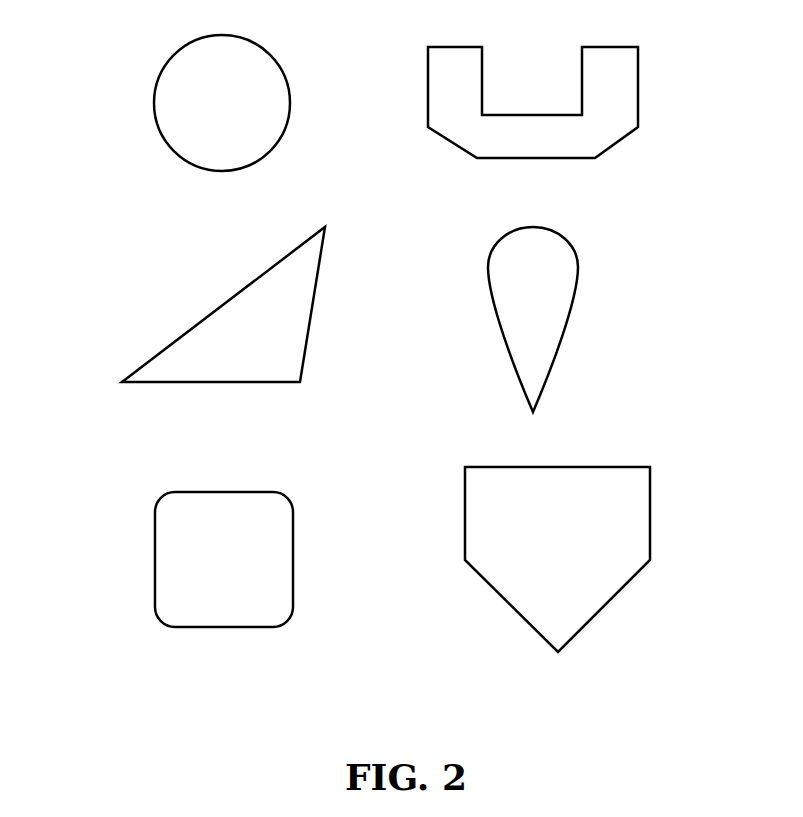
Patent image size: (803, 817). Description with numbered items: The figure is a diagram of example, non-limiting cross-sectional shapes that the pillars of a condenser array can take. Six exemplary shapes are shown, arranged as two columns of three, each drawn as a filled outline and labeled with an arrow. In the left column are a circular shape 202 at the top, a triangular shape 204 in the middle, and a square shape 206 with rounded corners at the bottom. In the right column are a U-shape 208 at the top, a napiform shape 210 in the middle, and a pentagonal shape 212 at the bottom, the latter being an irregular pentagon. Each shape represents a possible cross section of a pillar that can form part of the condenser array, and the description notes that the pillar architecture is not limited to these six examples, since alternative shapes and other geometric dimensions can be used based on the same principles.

The circular shape 202 is at (156, 70).
The triangular shape 204 is at (108, 373).
The square shape 206 is at (143, 540).
The U-shape 208 is at (667, 87).
The napiform shape 210 is at (592, 282).
The pentagonal shape 212 is at (664, 520).